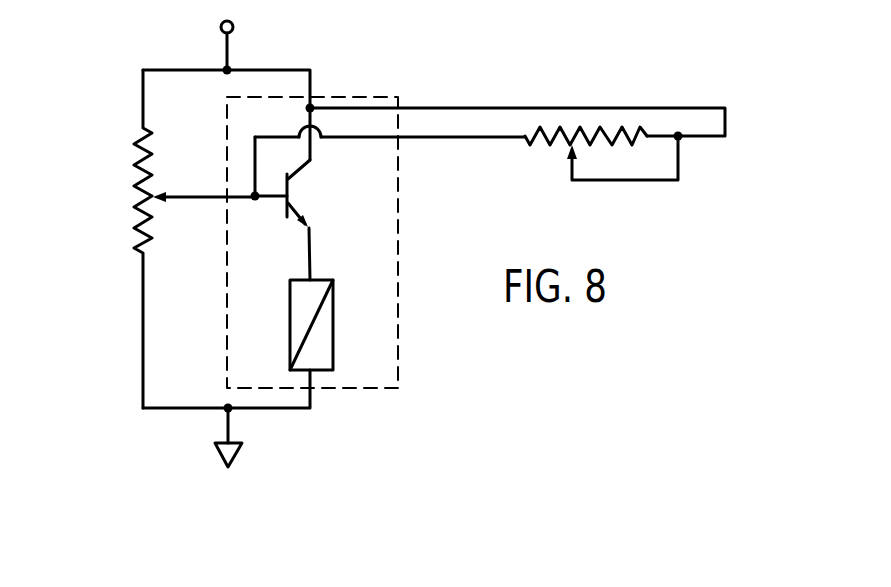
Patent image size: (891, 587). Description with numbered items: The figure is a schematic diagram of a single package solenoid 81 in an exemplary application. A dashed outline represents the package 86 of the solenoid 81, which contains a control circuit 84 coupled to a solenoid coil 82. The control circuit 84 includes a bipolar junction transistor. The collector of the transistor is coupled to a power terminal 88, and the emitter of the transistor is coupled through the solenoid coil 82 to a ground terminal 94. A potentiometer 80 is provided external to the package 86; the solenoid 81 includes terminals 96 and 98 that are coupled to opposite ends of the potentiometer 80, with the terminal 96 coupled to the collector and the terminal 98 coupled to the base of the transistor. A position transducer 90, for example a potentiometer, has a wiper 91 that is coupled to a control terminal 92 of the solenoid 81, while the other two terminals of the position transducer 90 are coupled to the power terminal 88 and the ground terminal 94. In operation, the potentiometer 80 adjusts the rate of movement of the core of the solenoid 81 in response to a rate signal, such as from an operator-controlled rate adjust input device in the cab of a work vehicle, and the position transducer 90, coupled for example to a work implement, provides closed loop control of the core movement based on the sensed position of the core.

The potentiometer 80 is at (677, 194).
The solenoid 81 is at (366, 54).
The solenoid coil 82 is at (333, 320).
The control circuit 84 is at (346, 190).
The package 86 is at (357, 96).
The power terminal 88 is at (312, 78).
The position transducer 90 is at (113, 249).
The wiper 91 is at (185, 194).
The control terminal 92 is at (205, 198).
The ground terminal 94 is at (312, 398).
The terminal 96 is at (519, 106).
The terminal 98 is at (476, 138).